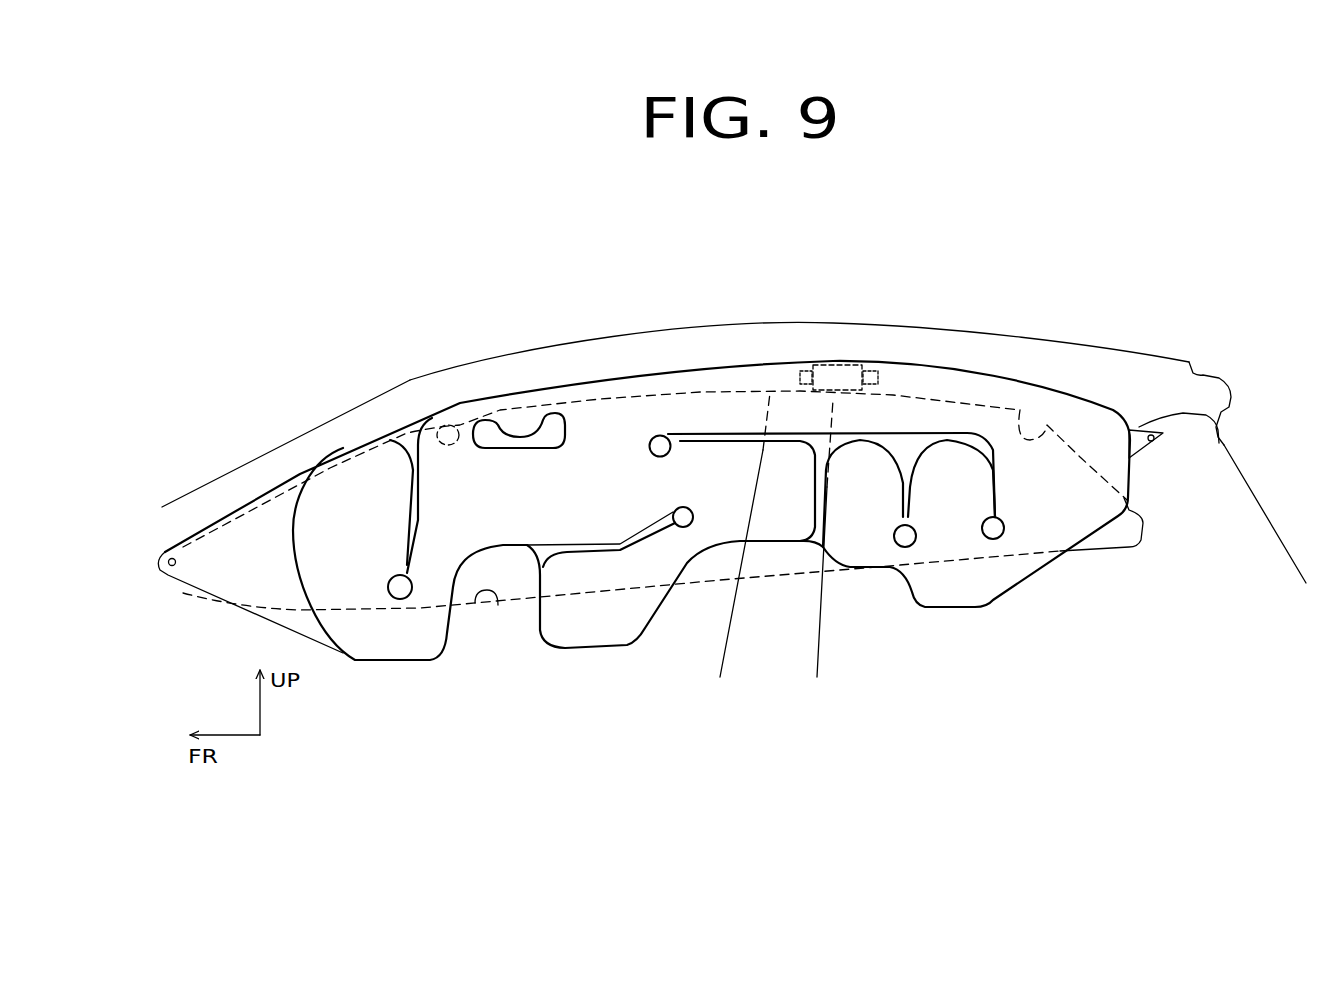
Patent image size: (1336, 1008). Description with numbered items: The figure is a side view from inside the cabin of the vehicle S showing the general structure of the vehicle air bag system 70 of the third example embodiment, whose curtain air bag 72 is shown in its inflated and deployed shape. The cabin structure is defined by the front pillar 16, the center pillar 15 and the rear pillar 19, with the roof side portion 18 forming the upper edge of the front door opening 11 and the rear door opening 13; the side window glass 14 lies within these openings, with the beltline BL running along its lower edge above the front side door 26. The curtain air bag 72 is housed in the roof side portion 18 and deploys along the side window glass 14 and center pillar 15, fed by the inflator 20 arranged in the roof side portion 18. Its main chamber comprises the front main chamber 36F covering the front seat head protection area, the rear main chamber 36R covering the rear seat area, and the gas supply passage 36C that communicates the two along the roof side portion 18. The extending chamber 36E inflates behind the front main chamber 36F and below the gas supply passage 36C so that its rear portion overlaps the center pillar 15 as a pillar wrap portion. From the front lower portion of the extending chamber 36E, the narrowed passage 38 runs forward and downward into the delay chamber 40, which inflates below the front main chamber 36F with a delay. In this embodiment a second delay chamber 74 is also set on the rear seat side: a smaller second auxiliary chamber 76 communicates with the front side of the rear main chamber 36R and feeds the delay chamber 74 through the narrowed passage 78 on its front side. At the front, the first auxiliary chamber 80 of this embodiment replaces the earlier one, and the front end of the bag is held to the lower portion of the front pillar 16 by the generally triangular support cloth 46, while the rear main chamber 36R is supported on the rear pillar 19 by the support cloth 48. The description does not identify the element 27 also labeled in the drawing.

The front door opening 11 is at (447, 433).
The rear door opening 13 is at (1037, 407).
The side window glass 14 is at (645, 410).
The center pillar 15 is at (800, 630).
The front pillar 16 is at (247, 465).
The roof side portion 18 is at (723, 353).
The rear pillar 19 is at (1213, 443).
The inflator 20 is at (833, 365).
The front side door 26 is at (458, 648).
The lower end portion 27 is at (1028, 593).
The front main chamber 36F is at (583, 467).
The gas supply passage 36C is at (967, 395).
The rear main chamber 36R is at (1103, 427).
The extending chamber 36E is at (770, 527).
The narrowed passage 38 is at (693, 563).
The delay chamber 40 is at (628, 620).
The support cloth 46 is at (217, 583).
The support cloth 48 is at (1228, 415).
The vehicle air bag system 70 is at (702, 723).
The curtain air bag 72 is at (1042, 583).
The delay chamber 74 is at (865, 542).
The second auxiliary chamber 76 is at (968, 580).
The narrowed passage 78 is at (900, 553).
The first auxiliary chamber 80 is at (355, 480).
The beltline BL is at (498, 605).
The vehicle S is at (1058, 318).